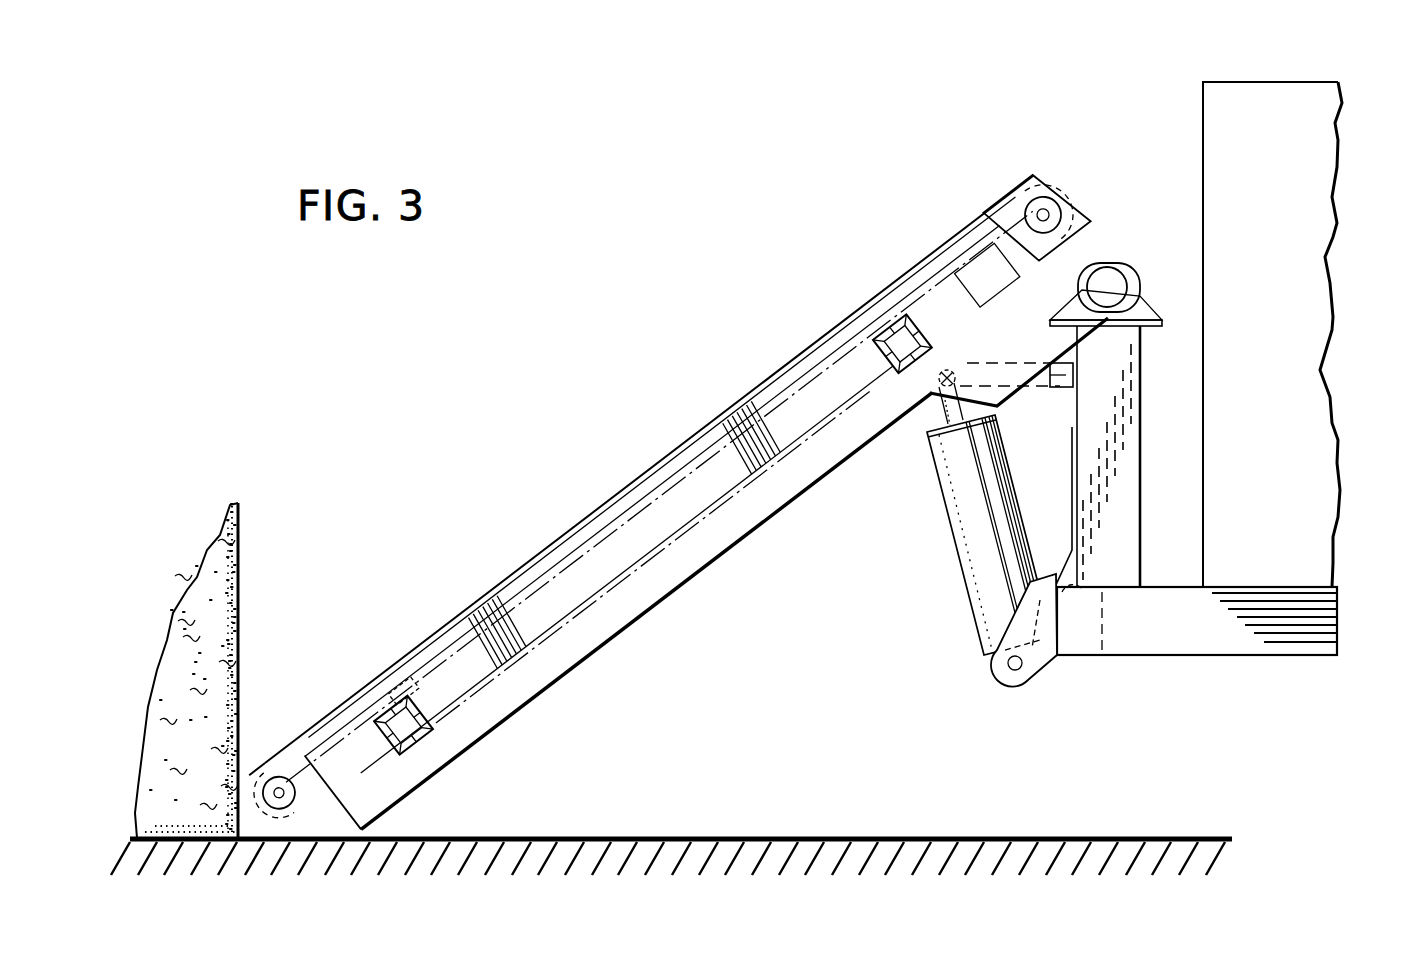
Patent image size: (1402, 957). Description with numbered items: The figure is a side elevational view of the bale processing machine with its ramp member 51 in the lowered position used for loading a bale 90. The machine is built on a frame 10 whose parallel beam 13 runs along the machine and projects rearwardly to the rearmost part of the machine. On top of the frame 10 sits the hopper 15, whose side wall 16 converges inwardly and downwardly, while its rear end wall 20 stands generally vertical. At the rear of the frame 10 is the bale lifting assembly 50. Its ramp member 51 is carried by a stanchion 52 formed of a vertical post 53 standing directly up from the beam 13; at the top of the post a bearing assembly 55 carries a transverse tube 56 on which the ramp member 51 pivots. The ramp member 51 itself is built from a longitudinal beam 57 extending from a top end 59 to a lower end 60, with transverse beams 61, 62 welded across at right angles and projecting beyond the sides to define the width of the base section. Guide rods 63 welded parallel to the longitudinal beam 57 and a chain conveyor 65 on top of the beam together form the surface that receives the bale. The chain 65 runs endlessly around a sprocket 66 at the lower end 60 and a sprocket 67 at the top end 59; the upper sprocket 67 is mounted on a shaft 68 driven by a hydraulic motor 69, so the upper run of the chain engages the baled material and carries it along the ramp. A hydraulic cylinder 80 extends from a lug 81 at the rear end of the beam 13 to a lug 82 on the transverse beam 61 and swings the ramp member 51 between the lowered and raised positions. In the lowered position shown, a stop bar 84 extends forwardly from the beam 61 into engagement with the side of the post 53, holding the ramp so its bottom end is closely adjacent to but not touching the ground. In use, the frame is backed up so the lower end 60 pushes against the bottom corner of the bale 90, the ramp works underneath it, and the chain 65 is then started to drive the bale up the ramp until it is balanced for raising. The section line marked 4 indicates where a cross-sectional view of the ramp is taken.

The section line 4- 4 is at (1154, 161).
The frame 10 is at (1288, 664).
The beam 13 is at (1213, 638).
The hopper 15 is at (1236, 70).
The side wall 16 is at (1222, 338).
The rear end wall 20 is at (1197, 147).
The bale lifting assembly 50 is at (537, 370).
The ramp member 51 is at (706, 584).
The stanchion 52 is at (1145, 457).
The vertical post 53 is at (1118, 513).
The bearing assembly 55 is at (1140, 275).
The transverse tube 56 is at (1107, 280).
The longitudinal beam 57 is at (745, 515).
The top end 59 is at (1034, 155).
The lower end 60 is at (287, 714).
The transverse beam 61 is at (876, 375).
The transverse beam 62 is at (425, 760).
The guide rod 63 is at (727, 412).
The chain conveyor 65 is at (790, 350).
The sprocket 66 is at (268, 778).
The sprocket 67 is at (1022, 182).
The shaft 68 is at (1052, 190).
The hydraulic motor 69 is at (1082, 203).
The hydraulic cylinder 80 is at (963, 534).
The lug 81 is at (1042, 655).
The lug 82 is at (918, 415).
The stop bar 84 is at (1060, 372).
The bale 90 is at (247, 570).